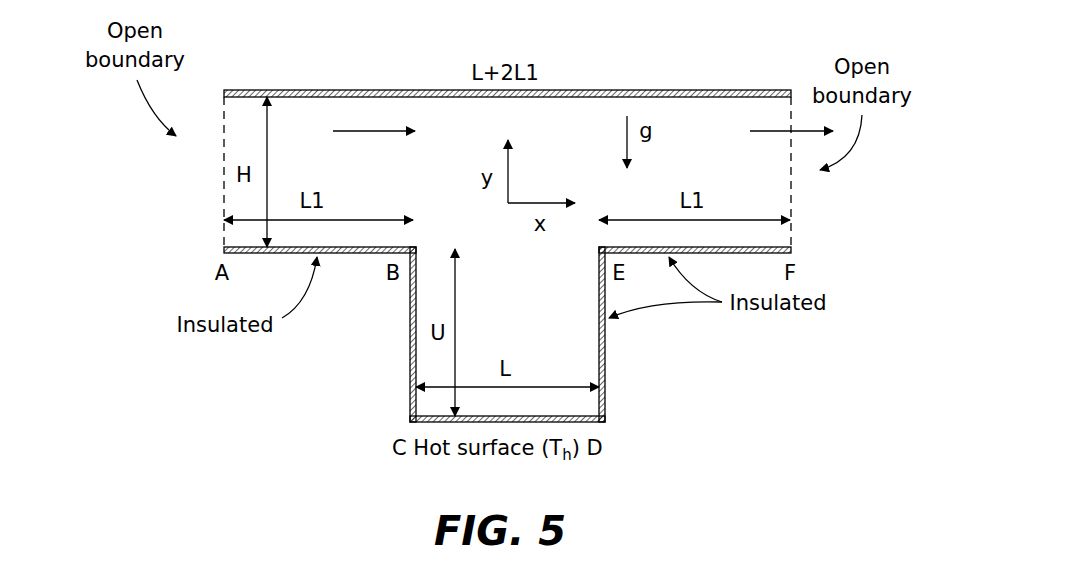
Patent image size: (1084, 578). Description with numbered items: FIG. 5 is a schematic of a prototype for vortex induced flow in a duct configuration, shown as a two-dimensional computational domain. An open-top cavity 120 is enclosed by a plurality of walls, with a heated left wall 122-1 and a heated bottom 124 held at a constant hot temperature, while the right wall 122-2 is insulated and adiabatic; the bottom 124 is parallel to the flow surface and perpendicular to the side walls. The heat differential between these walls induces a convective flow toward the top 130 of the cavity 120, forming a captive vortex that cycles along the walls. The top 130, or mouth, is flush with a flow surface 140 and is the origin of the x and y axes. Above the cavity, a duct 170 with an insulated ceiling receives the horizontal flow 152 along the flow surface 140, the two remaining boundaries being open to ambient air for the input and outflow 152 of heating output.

The cavity 120 is at (580, 344).
The left wall 122-1 is at (410, 380).
The right wall 122-2 is at (606, 380).
The bottom 124 is at (473, 415).
The top 130 is at (469, 216).
The flow surface 140 is at (220, 230).
The horizontal flow 152 is at (363, 131).
The duct 170 is at (656, 89).